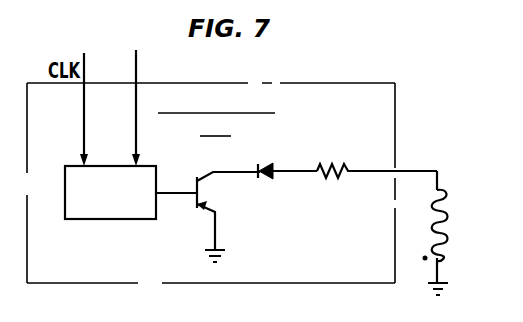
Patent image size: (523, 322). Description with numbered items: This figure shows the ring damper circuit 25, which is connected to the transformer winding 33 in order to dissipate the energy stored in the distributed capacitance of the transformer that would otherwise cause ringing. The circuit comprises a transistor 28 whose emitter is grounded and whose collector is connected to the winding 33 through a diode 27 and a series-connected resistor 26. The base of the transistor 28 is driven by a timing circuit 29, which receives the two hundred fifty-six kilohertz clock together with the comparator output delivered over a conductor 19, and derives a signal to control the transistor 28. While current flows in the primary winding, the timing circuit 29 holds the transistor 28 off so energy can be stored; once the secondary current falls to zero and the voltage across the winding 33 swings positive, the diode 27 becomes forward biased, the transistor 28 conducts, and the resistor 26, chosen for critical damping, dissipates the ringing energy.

The conductor 19 is at (139, 67).
The ring damper circuit 25 is at (251, 80).
The resistor 26 is at (332, 164).
The diode 27 is at (266, 165).
The transistor 28 is at (208, 190).
The timing circuit 29 is at (115, 219).
The winding 33 is at (451, 230).